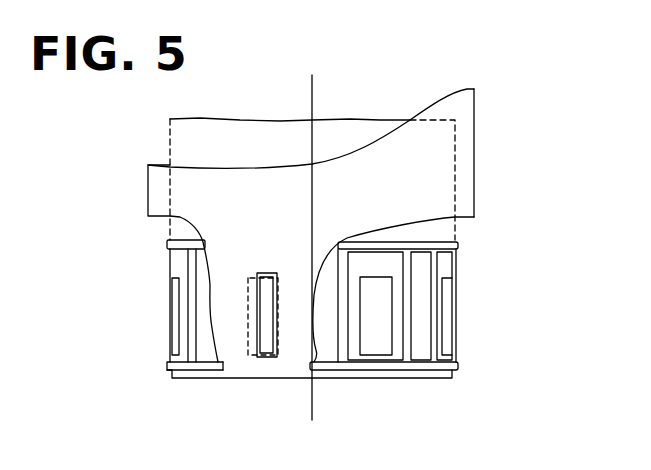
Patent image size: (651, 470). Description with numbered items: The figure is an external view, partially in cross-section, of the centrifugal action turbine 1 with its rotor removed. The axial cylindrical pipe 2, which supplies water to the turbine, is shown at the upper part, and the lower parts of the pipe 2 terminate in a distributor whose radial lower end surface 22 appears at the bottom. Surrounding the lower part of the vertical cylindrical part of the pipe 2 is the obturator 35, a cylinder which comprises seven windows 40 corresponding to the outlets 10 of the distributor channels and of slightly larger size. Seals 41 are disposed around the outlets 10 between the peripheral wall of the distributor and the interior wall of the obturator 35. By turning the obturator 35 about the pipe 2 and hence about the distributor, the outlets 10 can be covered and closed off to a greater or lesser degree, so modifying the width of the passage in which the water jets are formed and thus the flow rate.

The centrifugal action turbine 1 is at (333, 225).
The axial cylindrical pipe 2 is at (164, 136).
The outlet 10 is at (173, 317).
The radial lower end surface 22 is at (190, 378).
The obturator 35 is at (422, 187).
The window 40 is at (278, 328).
The seal 41 is at (178, 245).